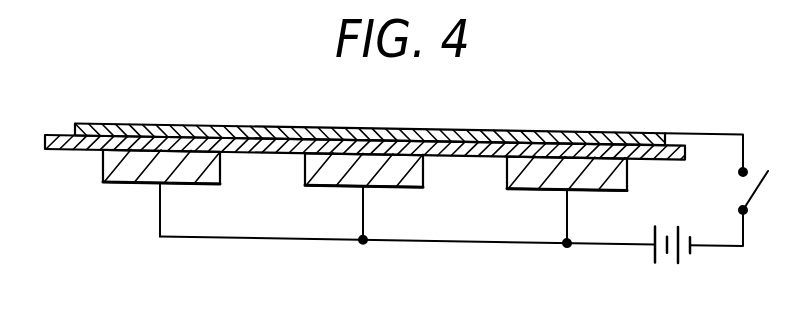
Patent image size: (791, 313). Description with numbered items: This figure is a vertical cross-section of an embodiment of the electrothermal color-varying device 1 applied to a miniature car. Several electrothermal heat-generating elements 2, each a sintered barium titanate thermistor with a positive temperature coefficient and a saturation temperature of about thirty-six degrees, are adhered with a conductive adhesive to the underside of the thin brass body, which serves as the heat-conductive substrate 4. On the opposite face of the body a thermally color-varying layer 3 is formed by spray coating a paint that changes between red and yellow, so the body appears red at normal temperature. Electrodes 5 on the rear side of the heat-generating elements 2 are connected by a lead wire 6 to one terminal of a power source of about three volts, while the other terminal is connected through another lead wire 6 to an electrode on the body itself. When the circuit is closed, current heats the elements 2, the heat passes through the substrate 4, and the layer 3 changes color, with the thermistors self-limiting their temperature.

The electrothermal color-varying device 1 is at (350, 123).
The electrothermal heat-generating element 2 is at (150, 163).
The thermally color-varying layer 3 is at (213, 131).
The substrate 4 is at (60, 135).
The electrodes 5 is at (670, 132).
The lead wires 6 is at (597, 247).